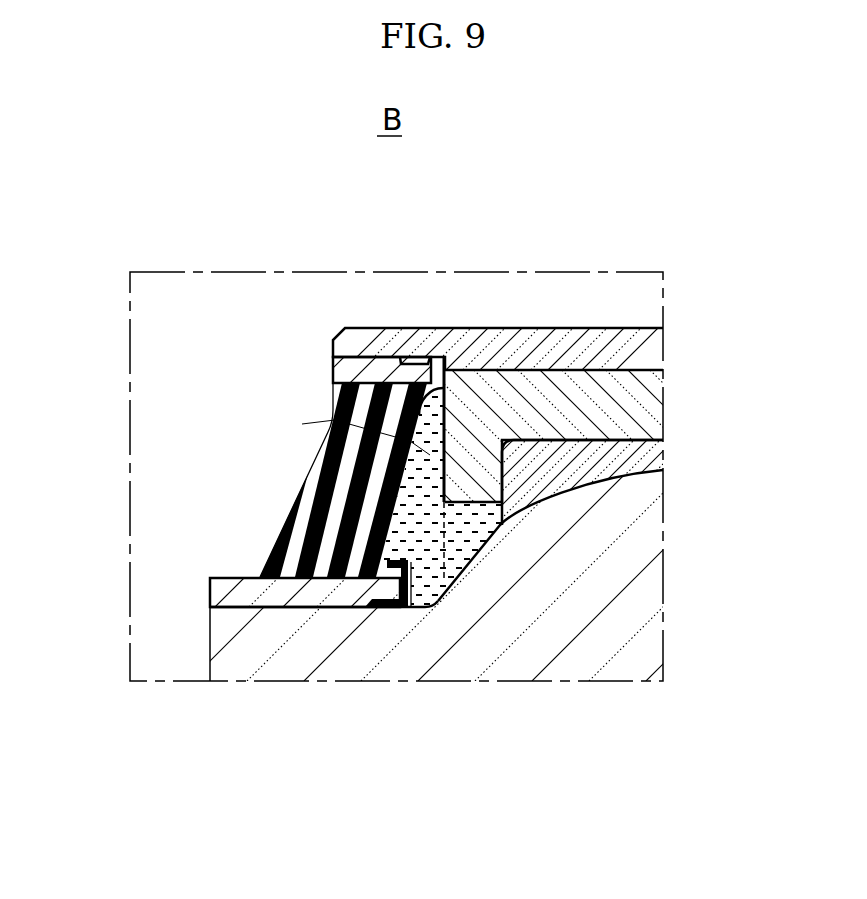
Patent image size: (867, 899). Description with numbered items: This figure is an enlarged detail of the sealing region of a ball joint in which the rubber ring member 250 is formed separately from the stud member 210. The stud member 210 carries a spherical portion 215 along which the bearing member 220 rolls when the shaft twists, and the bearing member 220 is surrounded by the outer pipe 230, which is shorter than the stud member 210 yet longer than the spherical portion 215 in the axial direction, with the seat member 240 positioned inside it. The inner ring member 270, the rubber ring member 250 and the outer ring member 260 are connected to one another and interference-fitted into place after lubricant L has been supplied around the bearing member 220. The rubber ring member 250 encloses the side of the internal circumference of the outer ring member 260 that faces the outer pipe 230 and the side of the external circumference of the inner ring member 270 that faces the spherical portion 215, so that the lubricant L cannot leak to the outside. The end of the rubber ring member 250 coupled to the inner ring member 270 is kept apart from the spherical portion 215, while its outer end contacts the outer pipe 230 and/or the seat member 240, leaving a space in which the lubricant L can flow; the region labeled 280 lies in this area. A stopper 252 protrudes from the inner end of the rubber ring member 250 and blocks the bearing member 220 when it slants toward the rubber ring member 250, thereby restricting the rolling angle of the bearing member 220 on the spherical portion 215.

The stud member 210 is at (605, 637).
The spherical portion 215 is at (613, 527).
The bearing member 220 is at (628, 453).
The outer pipe 230 is at (588, 348).
The seat member 240 is at (597, 408).
The rubber ring member 250 is at (337, 513).
The stopper 252 is at (387, 570).
The outer ring member 260 is at (360, 372).
The inner ring member 270 is at (247, 593).
The gap 280 is at (423, 583).
The lubricant L is at (358, 434).